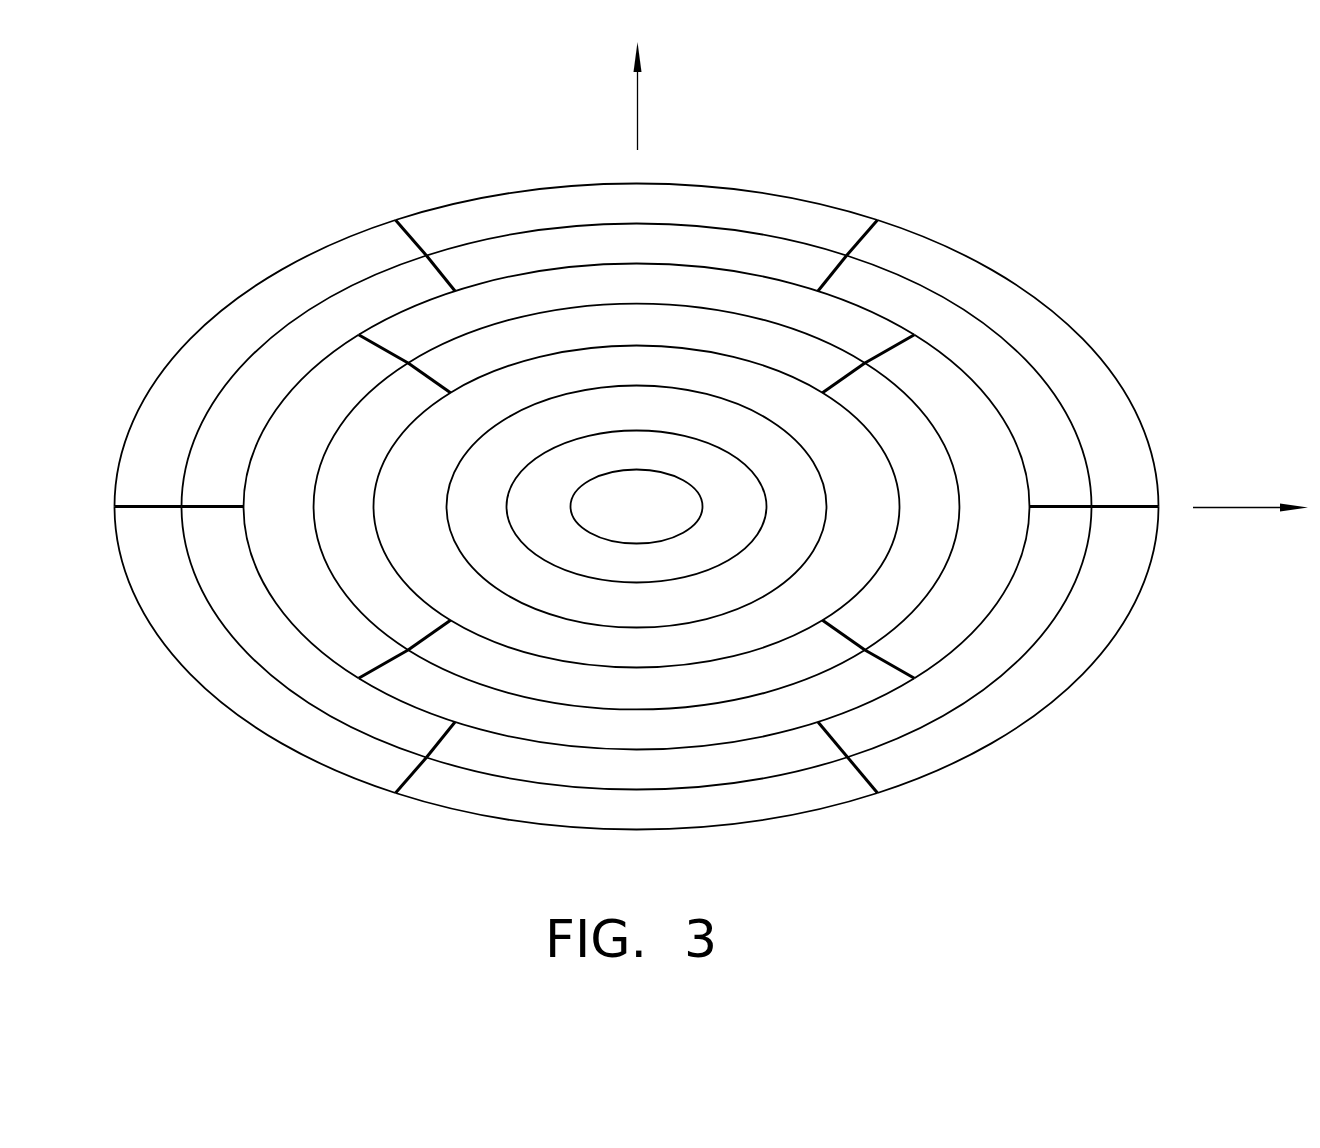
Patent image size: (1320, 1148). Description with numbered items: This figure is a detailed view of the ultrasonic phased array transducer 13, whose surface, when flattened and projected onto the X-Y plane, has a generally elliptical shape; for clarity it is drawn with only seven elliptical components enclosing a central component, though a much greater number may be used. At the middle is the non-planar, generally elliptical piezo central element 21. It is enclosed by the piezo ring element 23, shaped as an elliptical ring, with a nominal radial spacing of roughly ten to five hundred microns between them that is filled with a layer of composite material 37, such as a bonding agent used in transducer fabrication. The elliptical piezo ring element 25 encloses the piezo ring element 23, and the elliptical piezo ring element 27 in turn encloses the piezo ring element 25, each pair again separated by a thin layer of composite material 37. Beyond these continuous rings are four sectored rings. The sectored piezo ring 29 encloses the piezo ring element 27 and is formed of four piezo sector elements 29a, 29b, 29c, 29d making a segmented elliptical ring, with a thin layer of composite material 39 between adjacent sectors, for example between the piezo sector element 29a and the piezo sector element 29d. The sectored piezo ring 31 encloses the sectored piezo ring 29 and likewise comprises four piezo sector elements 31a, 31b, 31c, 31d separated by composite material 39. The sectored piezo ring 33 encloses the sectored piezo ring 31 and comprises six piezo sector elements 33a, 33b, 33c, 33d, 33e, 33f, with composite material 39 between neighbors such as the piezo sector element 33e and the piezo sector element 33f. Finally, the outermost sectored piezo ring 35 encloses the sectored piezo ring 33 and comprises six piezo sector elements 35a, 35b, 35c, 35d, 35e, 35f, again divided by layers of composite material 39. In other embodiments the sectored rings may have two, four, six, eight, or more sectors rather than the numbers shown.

The ultrasonic phased array transducer 13 is at (285, 836).
The piezo central element 21 is at (645, 535).
The piezo ring element 23 is at (740, 534).
The piezo ring element 25 is at (803, 534).
The piezo ring element 27 is at (876, 534).
The sectored piezo ring 29 is at (838, 345).
The piezo sector element 29a is at (947, 558).
The piezo sector element 29b is at (661, 338).
The piezo sector element 29c is at (380, 465).
The piezo sector element 29d is at (661, 698).
The sectored piezo ring 31 is at (892, 322).
The piezo sector element 31a is at (982, 616).
The piezo sector element 31b is at (661, 296).
The piezo sector element 31c is at (328, 430).
The piezo sector element 31d is at (661, 740).
The sectored piezo ring 33 is at (958, 302).
The piezo sector element 33a is at (1077, 456).
The piezo sector element 33b is at (661, 256).
The piezo sector element 33c is at (298, 381).
The piezo sector element 33d is at (282, 635).
The piezo sector element 33e is at (661, 781).
The piezo sector element 33f is at (1028, 643).
The sectored piezo ring 35 is at (1040, 312).
The piezo sector element 35a is at (1138, 470).
The piezo sector element 35b is at (661, 213).
The piezo sector element 35c is at (228, 371).
The piezo sector element 35d is at (233, 666).
The piezo sector element 35e is at (661, 823).
The piezo sector element 35f is at (1098, 643).
The layer of composite material 37 is at (646, 470).
The layer of composite material 39 is at (858, 777).